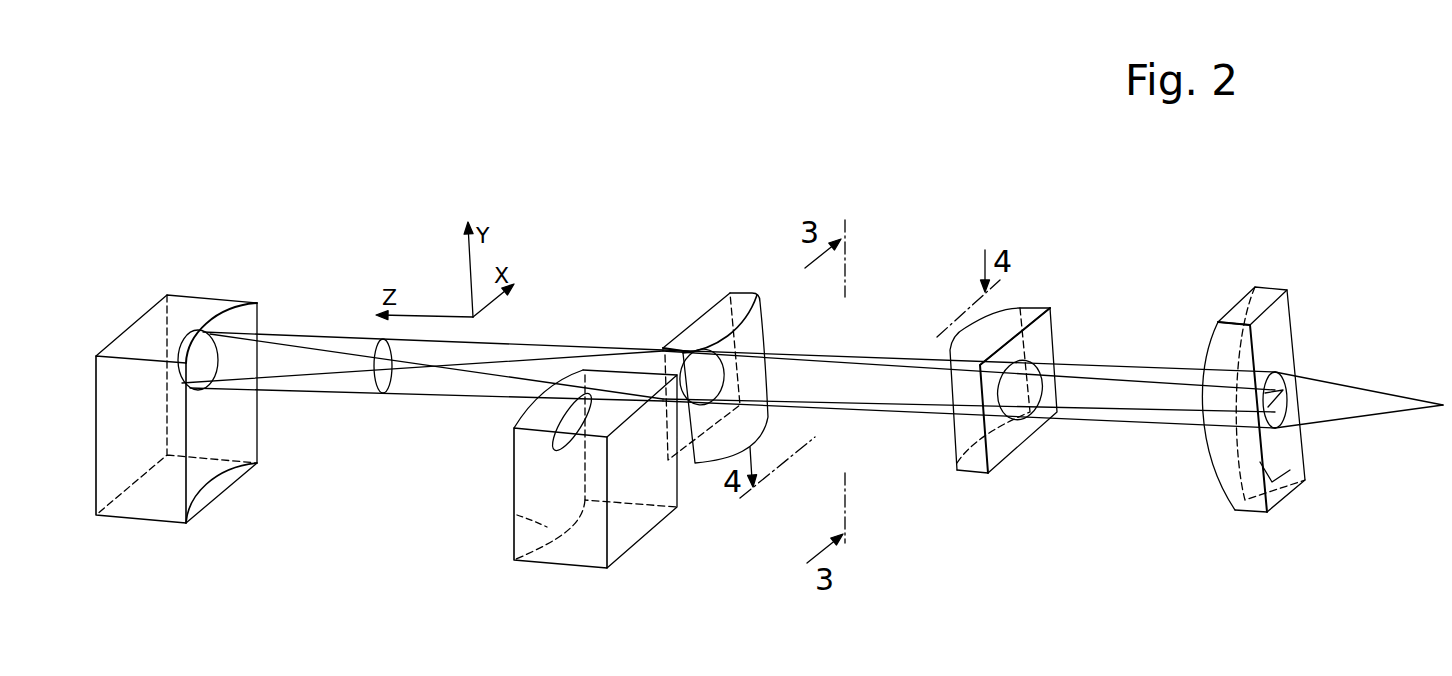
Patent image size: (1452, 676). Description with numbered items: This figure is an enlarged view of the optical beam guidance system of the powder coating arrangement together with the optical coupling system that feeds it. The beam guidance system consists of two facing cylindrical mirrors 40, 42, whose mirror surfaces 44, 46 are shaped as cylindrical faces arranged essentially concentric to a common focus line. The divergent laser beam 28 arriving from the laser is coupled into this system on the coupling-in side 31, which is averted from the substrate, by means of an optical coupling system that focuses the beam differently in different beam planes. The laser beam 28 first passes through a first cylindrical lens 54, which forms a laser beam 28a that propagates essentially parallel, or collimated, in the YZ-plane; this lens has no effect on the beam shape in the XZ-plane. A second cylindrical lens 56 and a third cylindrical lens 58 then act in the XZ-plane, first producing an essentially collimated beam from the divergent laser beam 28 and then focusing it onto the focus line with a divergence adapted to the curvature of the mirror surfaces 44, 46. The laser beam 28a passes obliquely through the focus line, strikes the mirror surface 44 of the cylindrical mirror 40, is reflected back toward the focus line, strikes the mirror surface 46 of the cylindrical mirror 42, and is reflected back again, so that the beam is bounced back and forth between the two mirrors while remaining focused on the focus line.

The coupling-in side 31 is at (250, 272).
The cylindrical mirror 40 is at (152, 507).
The mirror surface 44 is at (205, 475).
The cylindrical mirror 42 is at (575, 553).
The mirror surface 46 is at (518, 513).
The laser beam 28a is at (558, 372).
The third cylindrical lens 58 is at (713, 315).
The second cylindrical lens 56 is at (1035, 312).
The first cylindrical lens 54 is at (1272, 292).
The laser beam 28 is at (1378, 403).